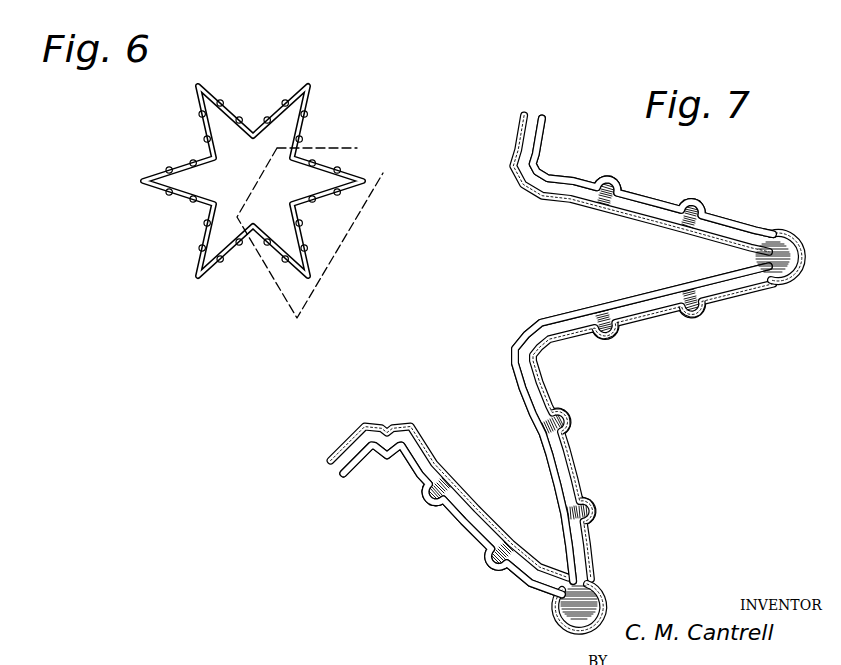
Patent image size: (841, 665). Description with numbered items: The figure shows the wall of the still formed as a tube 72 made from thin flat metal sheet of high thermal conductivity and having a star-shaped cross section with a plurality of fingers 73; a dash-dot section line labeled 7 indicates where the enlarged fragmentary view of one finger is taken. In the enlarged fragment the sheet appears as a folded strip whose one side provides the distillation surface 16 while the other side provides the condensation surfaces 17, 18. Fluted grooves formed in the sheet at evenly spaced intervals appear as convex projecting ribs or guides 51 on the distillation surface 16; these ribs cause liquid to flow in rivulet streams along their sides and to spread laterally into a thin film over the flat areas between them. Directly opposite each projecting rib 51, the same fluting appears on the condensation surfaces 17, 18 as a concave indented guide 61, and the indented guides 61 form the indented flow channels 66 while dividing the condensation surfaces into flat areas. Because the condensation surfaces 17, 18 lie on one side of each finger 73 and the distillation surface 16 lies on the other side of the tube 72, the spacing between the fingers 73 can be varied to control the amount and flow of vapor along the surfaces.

In FIG. 6, the section line 7- 7 is at (315, 227).
In FIG. 7, the distillation surface 16 is at (648, 309).
In FIG. 7, the condensation surface 17 is at (627, 294).
In FIG. 7, the condensation surface 18 is at (550, 349).
In FIG. 7, the projecting rib 51 is at (612, 177).
In FIG. 7, the indented guide 61 is at (606, 199).
In FIG. 7, the flow channel 66 is at (781, 232).
In FIG. 6, the tube 72 is at (180, 198).
In FIG. 6, the finger 73 is at (275, 112).
In FIG. 7, the finger 73 is at (653, 203).